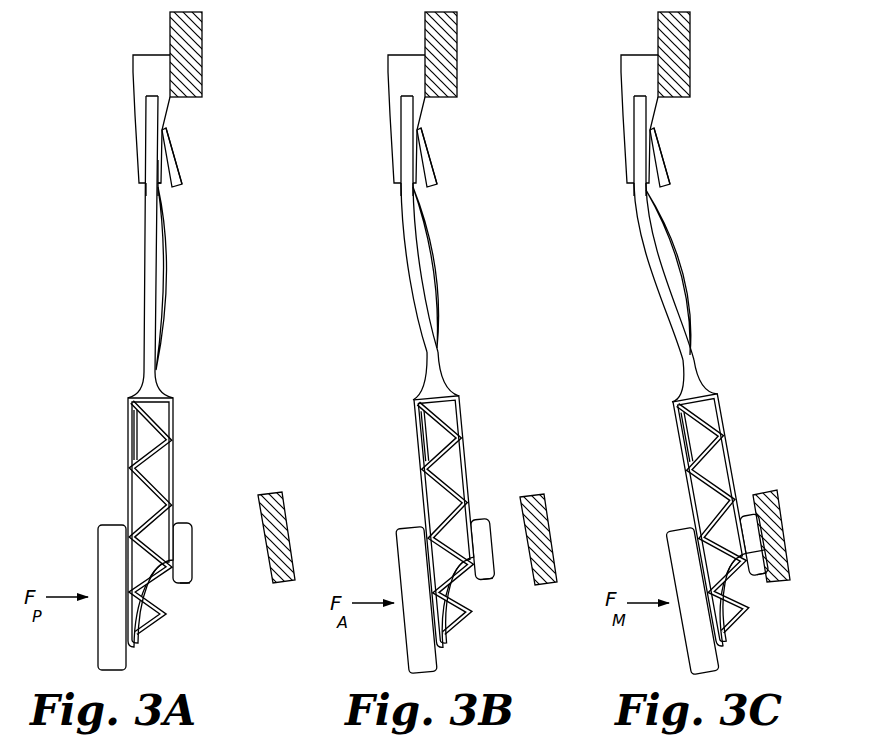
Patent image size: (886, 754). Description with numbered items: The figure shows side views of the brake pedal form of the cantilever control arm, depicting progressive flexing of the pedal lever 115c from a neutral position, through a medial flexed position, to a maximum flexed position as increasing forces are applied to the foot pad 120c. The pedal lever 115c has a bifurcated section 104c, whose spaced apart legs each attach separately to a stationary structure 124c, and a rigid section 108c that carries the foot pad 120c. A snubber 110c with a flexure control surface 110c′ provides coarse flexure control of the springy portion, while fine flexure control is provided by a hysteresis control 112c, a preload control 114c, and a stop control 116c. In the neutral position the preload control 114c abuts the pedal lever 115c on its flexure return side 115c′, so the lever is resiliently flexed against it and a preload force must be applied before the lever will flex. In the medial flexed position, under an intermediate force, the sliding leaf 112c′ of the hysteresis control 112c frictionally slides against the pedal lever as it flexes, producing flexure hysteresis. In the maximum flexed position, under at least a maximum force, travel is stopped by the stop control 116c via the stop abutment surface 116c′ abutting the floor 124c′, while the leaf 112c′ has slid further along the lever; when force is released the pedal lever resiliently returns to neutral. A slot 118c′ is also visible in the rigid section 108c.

In FIG. 3A, the bifurcated section 104c is at (136, 118).
In FIG. 3B, the bifurcated section 104c is at (395, 128).
In FIG. 3C, the bifurcated section 104c is at (634, 131).
In FIG. 3A, the rigid section 108c is at (128, 452).
In FIG. 3B, the rigid section 108c is at (415, 452).
In FIG. 3C, the rigid section 108c is at (683, 450).
In FIG. 3A, the snubber 110c is at (160, 170).
In FIG. 3A, the flexure control surface 110c′ is at (155, 187).
In FIG. 3B, the flexure control surface 110c′ is at (404, 186).
In FIG. 3C, the flexure control surface 110c′ is at (655, 192).
In FIG. 3A, the hysteresis control 112c is at (167, 143).
In FIG. 3A, the sliding leaf 112c′ is at (170, 157).
In FIG. 3B, the sliding leaf 112c′ is at (421, 155).
In FIG. 3C, the sliding leaf 112c′ is at (664, 178).
In FIG. 3A, the preload control 114c is at (150, 127).
In FIG. 3A, the pedal lever 115c is at (164, 271).
In FIG. 3B, the pedal lever 115c is at (393, 258).
In FIG. 3C, the pedal lever 115c is at (658, 340).
In FIG. 3A, the flexure return side 115c′ is at (143, 372).
In FIG. 3A, the stop control 116c is at (193, 522).
In FIG. 3A, the stop abutment surface 116c′ is at (192, 583).
In FIG. 3B, the stop abutment surface 116c′ is at (491, 581).
In FIG. 3C, the stop abutment surface 116c′ is at (758, 578).
In FIG. 3A, the slot 118c′ is at (133, 471).
In FIG. 3B, the slot 118c′ is at (428, 475).
In FIG. 3C, the slot 118c′ is at (690, 458).
In FIG. 3A, the foot pad 120c is at (100, 541).
In FIG. 3A, the stationary structure 124c is at (203, 50).
In FIG. 3B, the stationary structure 124c is at (458, 59).
In FIG. 3C, the stationary structure 124c is at (692, 82).
In FIG. 3A, the floor 124c′ is at (290, 530).
In FIG. 3B, the floor 124c′ is at (559, 512).
In FIG. 3C, the floor 124c′ is at (782, 495).